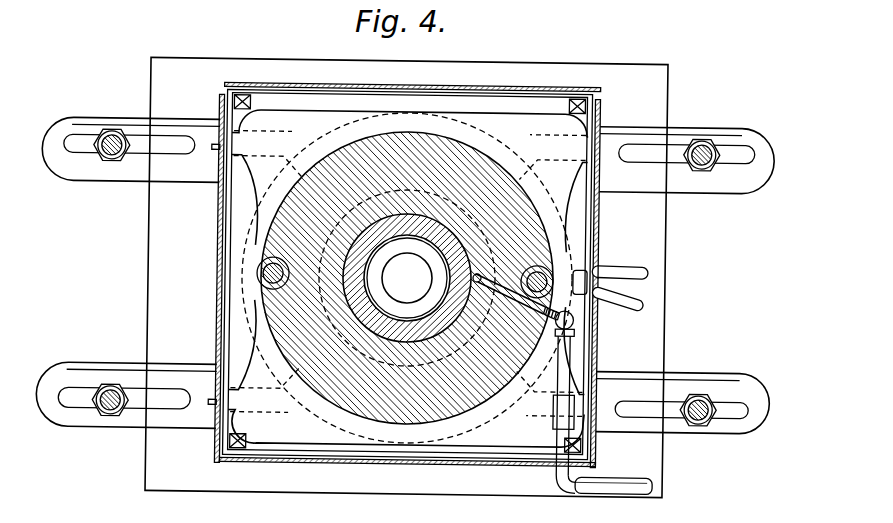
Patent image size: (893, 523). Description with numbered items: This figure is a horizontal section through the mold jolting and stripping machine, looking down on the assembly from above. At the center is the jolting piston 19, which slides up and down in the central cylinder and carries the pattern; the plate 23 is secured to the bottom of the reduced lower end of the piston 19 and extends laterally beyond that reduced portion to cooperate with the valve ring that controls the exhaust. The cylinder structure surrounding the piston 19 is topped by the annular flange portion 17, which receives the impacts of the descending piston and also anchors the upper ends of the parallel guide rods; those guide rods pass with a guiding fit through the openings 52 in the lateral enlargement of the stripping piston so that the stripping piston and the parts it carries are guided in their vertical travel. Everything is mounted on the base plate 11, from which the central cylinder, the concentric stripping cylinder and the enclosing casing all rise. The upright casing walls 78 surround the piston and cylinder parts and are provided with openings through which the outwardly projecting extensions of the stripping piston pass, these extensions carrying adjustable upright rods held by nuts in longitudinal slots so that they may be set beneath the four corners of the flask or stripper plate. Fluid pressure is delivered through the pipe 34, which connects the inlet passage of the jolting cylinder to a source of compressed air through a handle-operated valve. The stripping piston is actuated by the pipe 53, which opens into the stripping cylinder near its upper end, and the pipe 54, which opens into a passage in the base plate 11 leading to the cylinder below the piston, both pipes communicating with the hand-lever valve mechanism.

The base plate 11 is at (313, 476).
The annular flange portion 17 is at (266, 300).
The piston 19 is at (368, 328).
The plate 23 is at (405, 290).
The pipe 34 is at (615, 489).
The openings 52 is at (483, 280).
The pipe 53 is at (636, 297).
The pipe 54 is at (637, 268).
The casing walls 78 is at (522, 85).